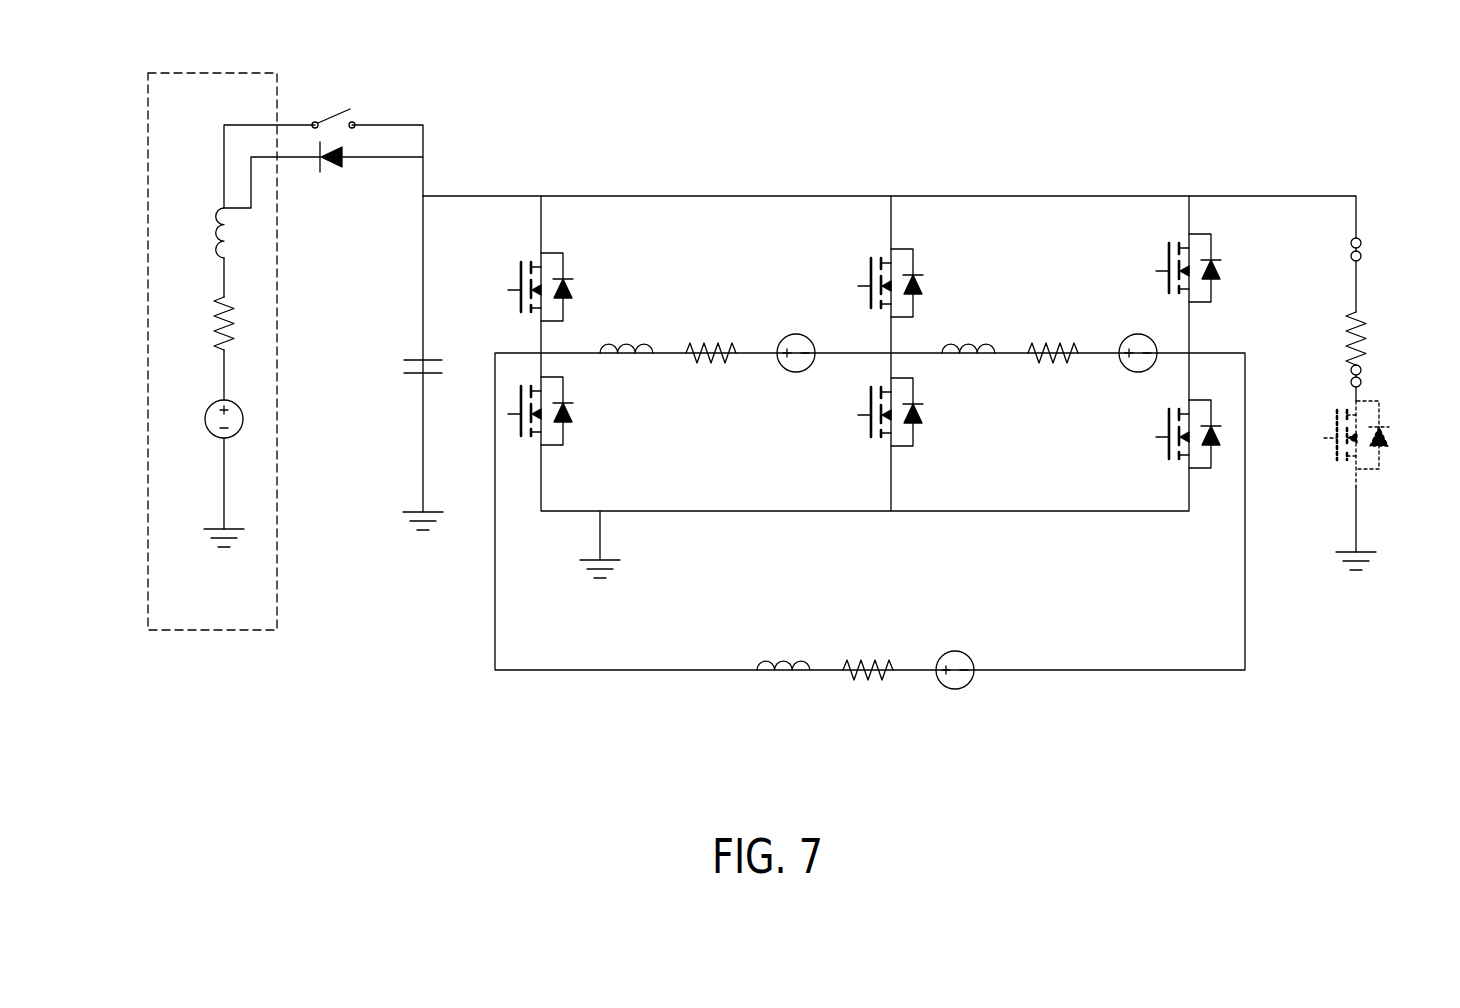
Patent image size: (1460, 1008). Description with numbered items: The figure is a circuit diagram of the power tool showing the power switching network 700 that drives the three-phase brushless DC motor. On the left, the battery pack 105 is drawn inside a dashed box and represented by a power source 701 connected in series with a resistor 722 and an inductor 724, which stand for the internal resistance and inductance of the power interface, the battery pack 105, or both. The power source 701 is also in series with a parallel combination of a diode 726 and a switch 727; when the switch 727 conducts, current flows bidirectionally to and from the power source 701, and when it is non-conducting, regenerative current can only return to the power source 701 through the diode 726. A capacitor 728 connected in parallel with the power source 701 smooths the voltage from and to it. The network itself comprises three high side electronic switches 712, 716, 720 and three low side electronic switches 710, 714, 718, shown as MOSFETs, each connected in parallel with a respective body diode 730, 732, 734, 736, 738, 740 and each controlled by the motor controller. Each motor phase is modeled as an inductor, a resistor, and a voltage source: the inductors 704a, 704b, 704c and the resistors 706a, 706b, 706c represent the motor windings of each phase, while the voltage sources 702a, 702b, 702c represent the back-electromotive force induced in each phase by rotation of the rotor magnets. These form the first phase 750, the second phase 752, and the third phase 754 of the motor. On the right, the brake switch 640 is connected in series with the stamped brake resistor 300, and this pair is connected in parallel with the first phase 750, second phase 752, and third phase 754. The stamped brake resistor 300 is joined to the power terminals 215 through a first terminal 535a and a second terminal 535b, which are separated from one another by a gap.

The battery pack 105 is at (280, 88).
The power switching network 700 is at (820, 132).
The power source 701 is at (243, 418).
The voltage source 702a is at (786, 368).
The voltage source 702b is at (1125, 368).
The voltage source 702c is at (955, 650).
The inductor 704a is at (628, 345).
The inductor 704b is at (970, 345).
The inductor 704c is at (785, 660).
The resistor 706a is at (712, 345).
The resistor 706b is at (1055, 345).
The resistor 706c is at (870, 660).
The low side electronic switch 710 is at (510, 410).
The high side electronic switch 712 is at (510, 288).
The low side electronic switch 714 is at (858, 416).
The high side electronic switch 716 is at (858, 285).
The low side electronic switch 718 is at (1156, 437).
The high side electronic switch 720 is at (1156, 270).
The resistor 722 is at (222, 320).
The inductor 724 is at (215, 225).
The diode 726 is at (333, 165).
The switch 727 is at (363, 118).
The capacitor 728 is at (403, 362).
The body diode 730 is at (573, 405).
The body diode 732 is at (573, 282).
The body diode 734 is at (925, 410).
The body diode 736 is at (915, 272).
The body diode 738 is at (1222, 445).
The body diode 740 is at (1222, 262).
The first phase 750 is at (697, 257).
The second phase 752 is at (1022, 263).
The third phase 754 is at (832, 712).
The power terminals 215 is at (1362, 243).
The first terminal 535a is at (1362, 257).
The second terminal 535b is at (1362, 370).
The stamped brake resistor 300 is at (1362, 328).
The brake switch 640 is at (1332, 425).